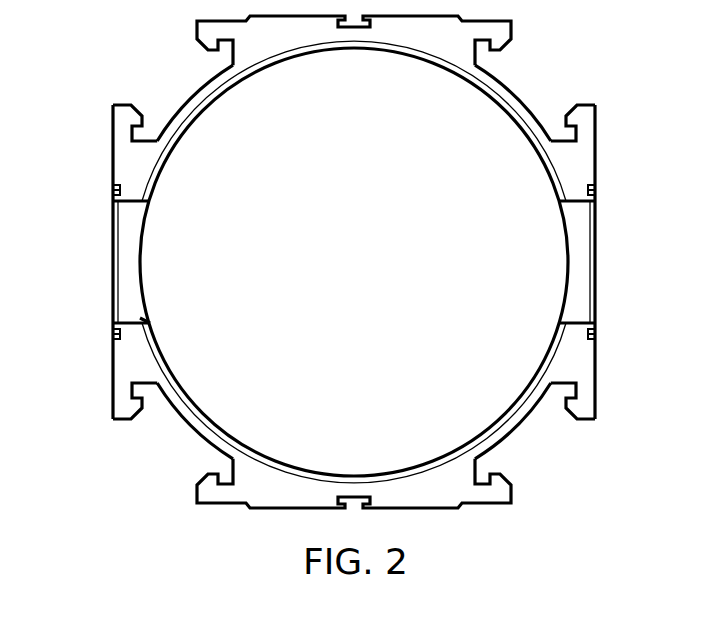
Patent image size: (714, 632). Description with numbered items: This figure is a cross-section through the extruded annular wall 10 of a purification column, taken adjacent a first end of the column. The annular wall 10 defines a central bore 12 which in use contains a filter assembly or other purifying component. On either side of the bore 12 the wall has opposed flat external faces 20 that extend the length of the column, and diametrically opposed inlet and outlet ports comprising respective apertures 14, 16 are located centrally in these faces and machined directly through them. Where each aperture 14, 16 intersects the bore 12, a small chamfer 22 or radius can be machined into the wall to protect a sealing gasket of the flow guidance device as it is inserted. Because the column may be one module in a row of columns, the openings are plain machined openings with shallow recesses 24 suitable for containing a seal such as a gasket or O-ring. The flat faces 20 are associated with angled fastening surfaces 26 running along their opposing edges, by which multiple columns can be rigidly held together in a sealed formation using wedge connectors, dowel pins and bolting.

The extruded annular wall 10 is at (519, 97).
The central bore 12 is at (372, 281).
The inlet port aperture 14 is at (127, 246).
The outlet port aperture 16 is at (582, 252).
The flat external faces 20 is at (113, 150).
The chamfer 22 is at (143, 314).
The shallow recesses 24 is at (596, 337).
The angled fastening surfaces 26 is at (140, 424).